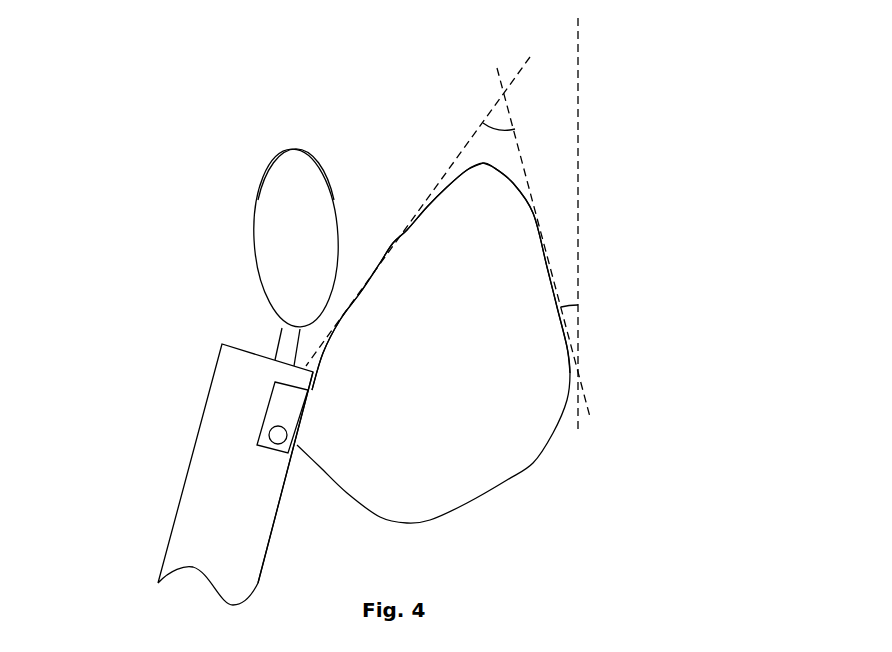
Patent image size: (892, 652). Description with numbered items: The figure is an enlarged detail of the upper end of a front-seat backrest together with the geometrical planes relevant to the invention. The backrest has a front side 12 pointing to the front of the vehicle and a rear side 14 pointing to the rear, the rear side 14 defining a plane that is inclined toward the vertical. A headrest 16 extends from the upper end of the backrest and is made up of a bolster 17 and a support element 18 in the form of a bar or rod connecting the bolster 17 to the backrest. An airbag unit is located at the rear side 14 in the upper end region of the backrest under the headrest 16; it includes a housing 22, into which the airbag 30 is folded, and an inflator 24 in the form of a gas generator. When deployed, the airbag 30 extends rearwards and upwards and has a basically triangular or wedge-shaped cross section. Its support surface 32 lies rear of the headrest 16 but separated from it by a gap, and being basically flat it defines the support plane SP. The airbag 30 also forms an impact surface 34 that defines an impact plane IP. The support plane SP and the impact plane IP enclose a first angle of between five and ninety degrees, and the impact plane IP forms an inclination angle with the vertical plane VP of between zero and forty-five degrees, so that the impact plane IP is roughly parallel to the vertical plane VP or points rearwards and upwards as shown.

The front side 12 is at (177, 518).
The rear side 14 is at (272, 543).
The headrest 16 is at (275, 255).
The bolster 17 is at (304, 164).
The support element 18 is at (283, 348).
The housing 22 is at (268, 400).
The inflator 24 is at (272, 434).
The airbag 30 is at (420, 433).
The support surface 32 is at (398, 236).
The impact surface 34 is at (552, 269).
The support plane SP is at (452, 163).
The impact plane IP is at (524, 165).
The vertical plane VP is at (578, 289).